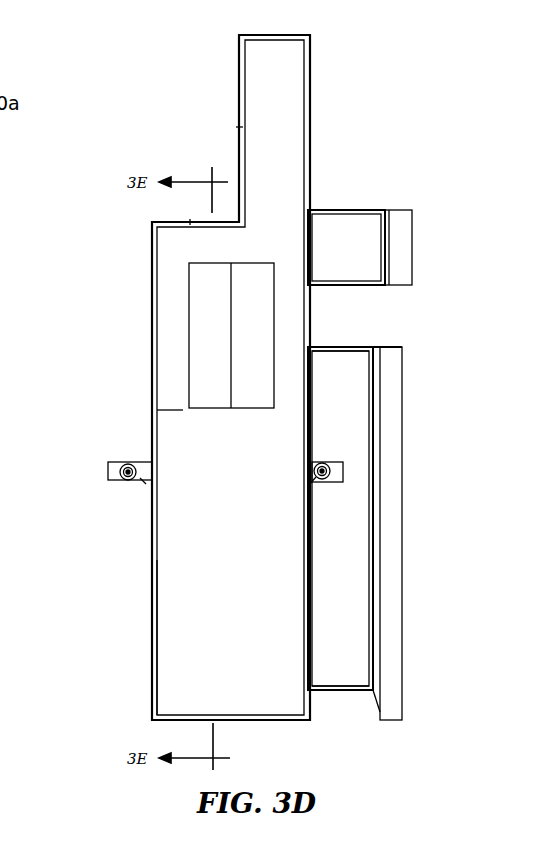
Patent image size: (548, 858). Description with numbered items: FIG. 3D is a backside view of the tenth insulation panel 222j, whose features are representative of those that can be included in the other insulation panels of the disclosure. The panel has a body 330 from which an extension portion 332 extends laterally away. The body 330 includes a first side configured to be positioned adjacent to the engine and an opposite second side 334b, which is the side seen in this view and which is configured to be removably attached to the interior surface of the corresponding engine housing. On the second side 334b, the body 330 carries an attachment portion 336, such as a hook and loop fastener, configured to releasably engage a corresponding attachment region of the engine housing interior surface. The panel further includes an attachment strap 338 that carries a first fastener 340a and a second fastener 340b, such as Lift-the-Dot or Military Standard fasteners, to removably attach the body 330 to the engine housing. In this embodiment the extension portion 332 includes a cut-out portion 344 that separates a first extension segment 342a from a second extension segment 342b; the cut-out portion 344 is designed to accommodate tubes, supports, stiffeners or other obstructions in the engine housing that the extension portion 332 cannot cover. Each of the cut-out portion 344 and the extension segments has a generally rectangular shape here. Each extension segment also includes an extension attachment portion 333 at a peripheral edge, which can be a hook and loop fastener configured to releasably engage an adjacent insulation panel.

The tenth insulation panel 222j is at (197, 662).
The body 330 is at (205, 500).
The extension portion 332 is at (345, 620).
The extension attachment portion 333 is at (402, 238).
The second side 334b is at (197, 583).
The attachment portion 336 is at (211, 312).
The attachment strap 338 is at (145, 478).
The first fastener 340a is at (128, 463).
The second fastener 340b is at (340, 480).
The first extension segment 342a is at (348, 672).
The second extension segment 342b is at (338, 243).
The cut-out portion 344 is at (340, 346).